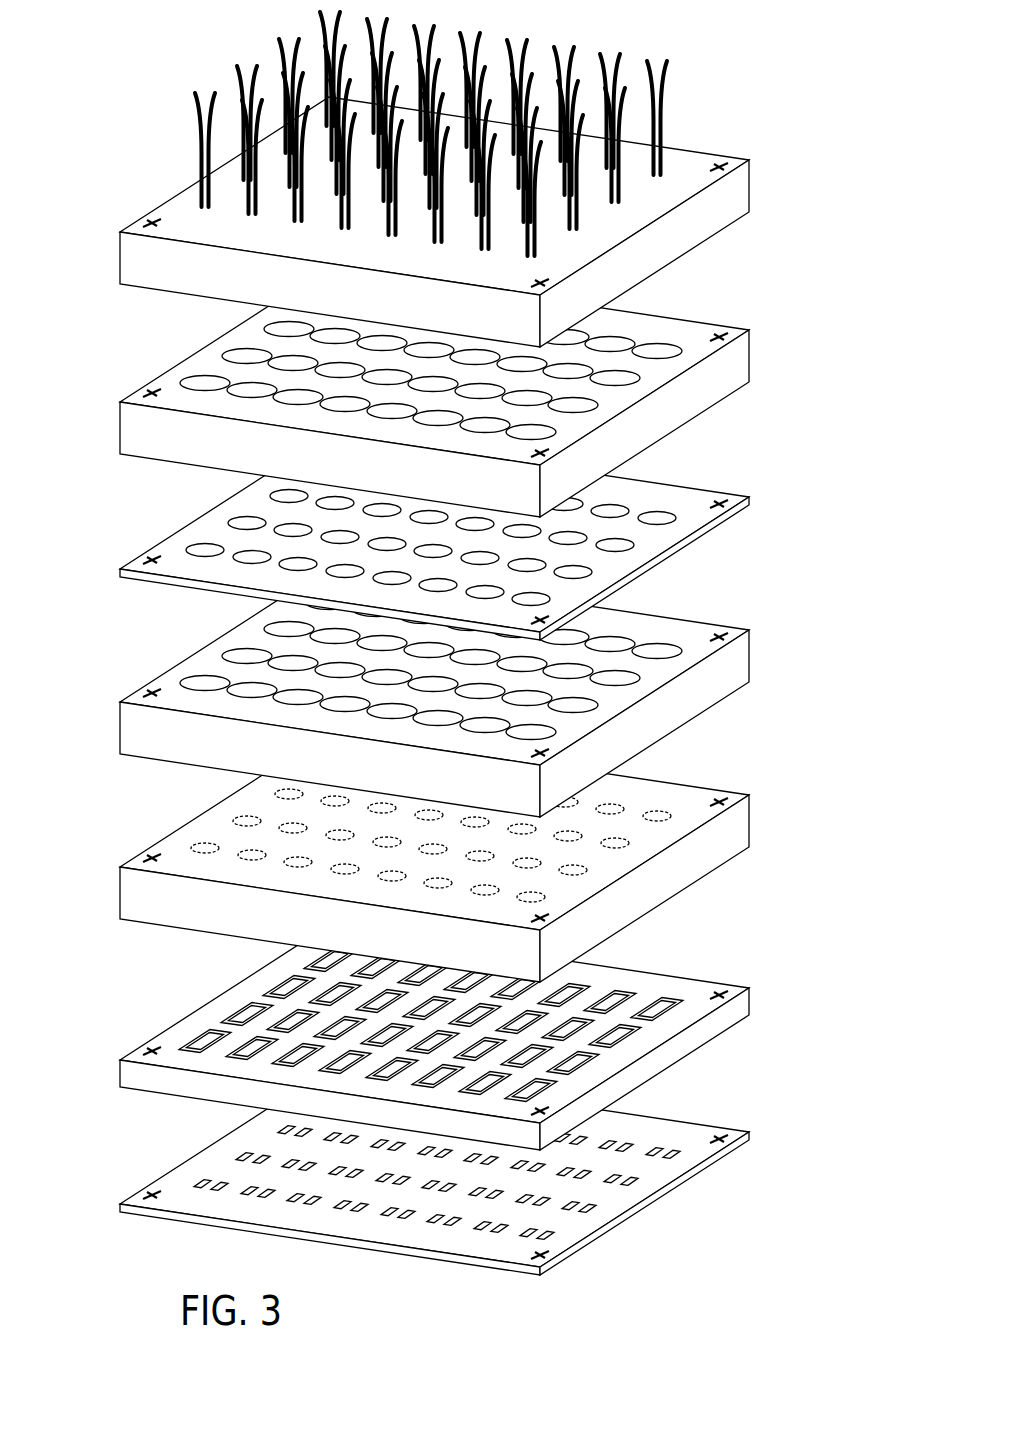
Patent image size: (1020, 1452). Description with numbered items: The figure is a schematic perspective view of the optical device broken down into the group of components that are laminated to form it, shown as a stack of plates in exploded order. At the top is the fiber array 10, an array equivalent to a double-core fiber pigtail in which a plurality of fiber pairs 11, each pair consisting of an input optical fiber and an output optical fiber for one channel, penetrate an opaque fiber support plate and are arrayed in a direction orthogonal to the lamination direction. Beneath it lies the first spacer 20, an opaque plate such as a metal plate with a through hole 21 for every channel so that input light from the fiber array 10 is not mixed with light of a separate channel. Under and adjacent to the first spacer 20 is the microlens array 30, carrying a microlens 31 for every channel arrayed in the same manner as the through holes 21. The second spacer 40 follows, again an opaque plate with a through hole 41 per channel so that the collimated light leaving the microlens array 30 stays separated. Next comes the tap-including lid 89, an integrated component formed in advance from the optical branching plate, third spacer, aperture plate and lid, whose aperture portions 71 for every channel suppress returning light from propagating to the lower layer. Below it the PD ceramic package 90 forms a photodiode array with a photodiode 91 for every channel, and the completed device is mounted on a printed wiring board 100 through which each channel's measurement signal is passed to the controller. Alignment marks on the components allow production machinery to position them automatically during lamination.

The fiber array 10 is at (433, 179).
The fiber pair 11 is at (471, 134).
The first spacer 20 is at (433, 392).
The through hole 21 is at (468, 356).
The microlens array 30 is at (433, 537).
The microlens 31 is at (471, 523).
The second spacer 40 is at (433, 692).
The through hole 41 is at (468, 656).
The aperture portion 71 is at (474, 820).
The tap-including lid 89 is at (433, 857).
The PD ceramic package 90 is at (433, 1037).
The photodiode 91 is at (468, 1016).
The printed wiring board 100 is at (438, 1172).